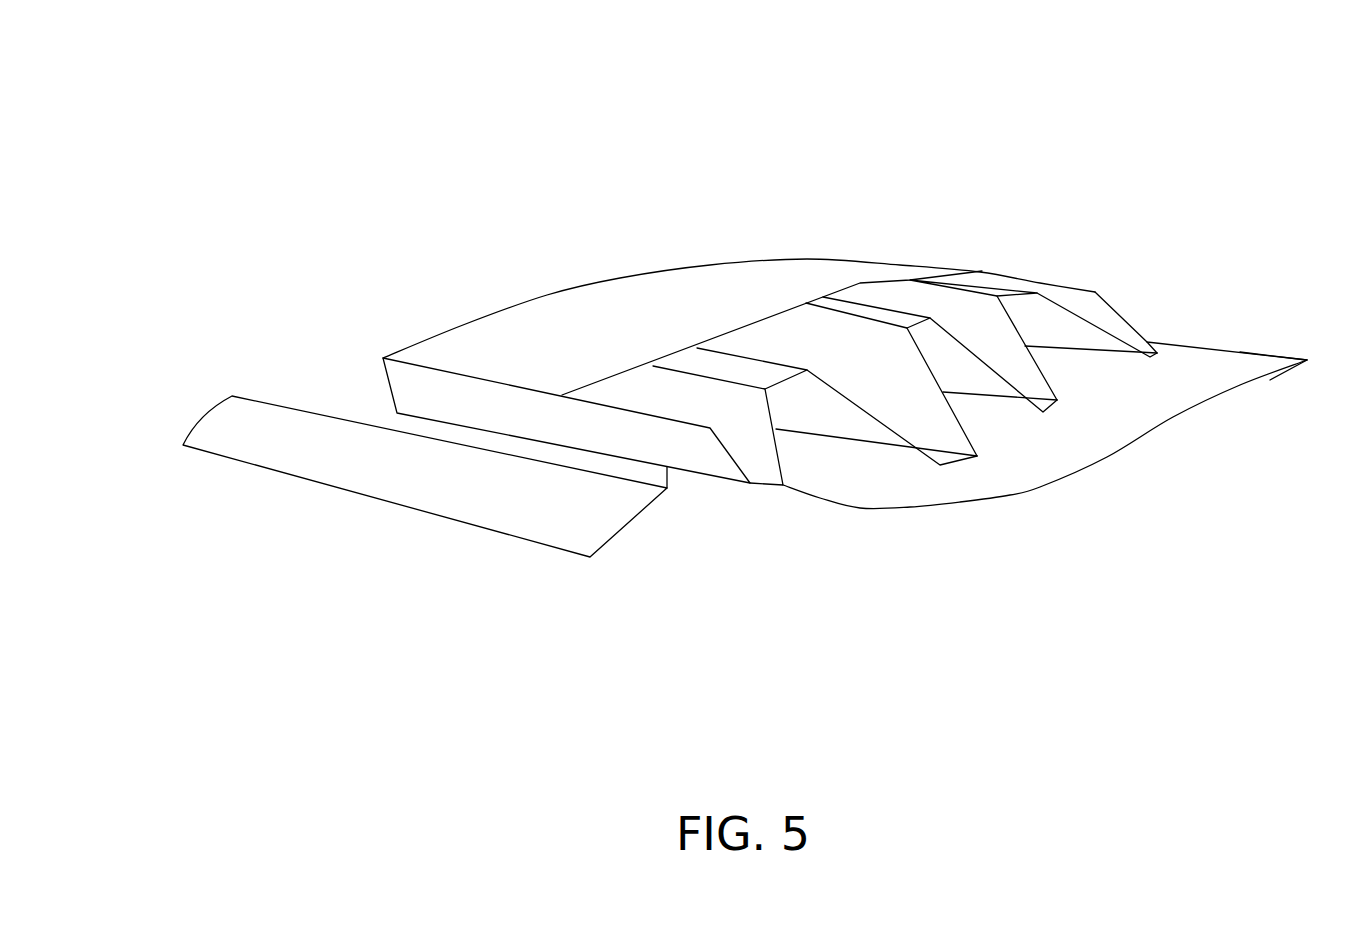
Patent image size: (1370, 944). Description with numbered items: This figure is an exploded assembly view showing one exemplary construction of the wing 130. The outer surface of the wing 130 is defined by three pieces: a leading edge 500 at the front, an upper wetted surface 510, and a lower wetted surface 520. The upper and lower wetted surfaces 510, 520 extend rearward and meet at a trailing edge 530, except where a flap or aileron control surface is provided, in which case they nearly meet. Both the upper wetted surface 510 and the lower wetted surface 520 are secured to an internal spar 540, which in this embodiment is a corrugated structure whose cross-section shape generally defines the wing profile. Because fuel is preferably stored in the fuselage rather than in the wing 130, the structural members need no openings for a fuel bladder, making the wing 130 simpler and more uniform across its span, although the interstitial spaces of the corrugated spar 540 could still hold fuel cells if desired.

The wing 130 is at (775, 206).
The leading edge 500 is at (408, 478).
The upper wetted surface 510 is at (537, 318).
The lower wetted surface 520 is at (1063, 442).
The trailing edge 530 is at (1305, 355).
The internal spar 540 is at (898, 380).